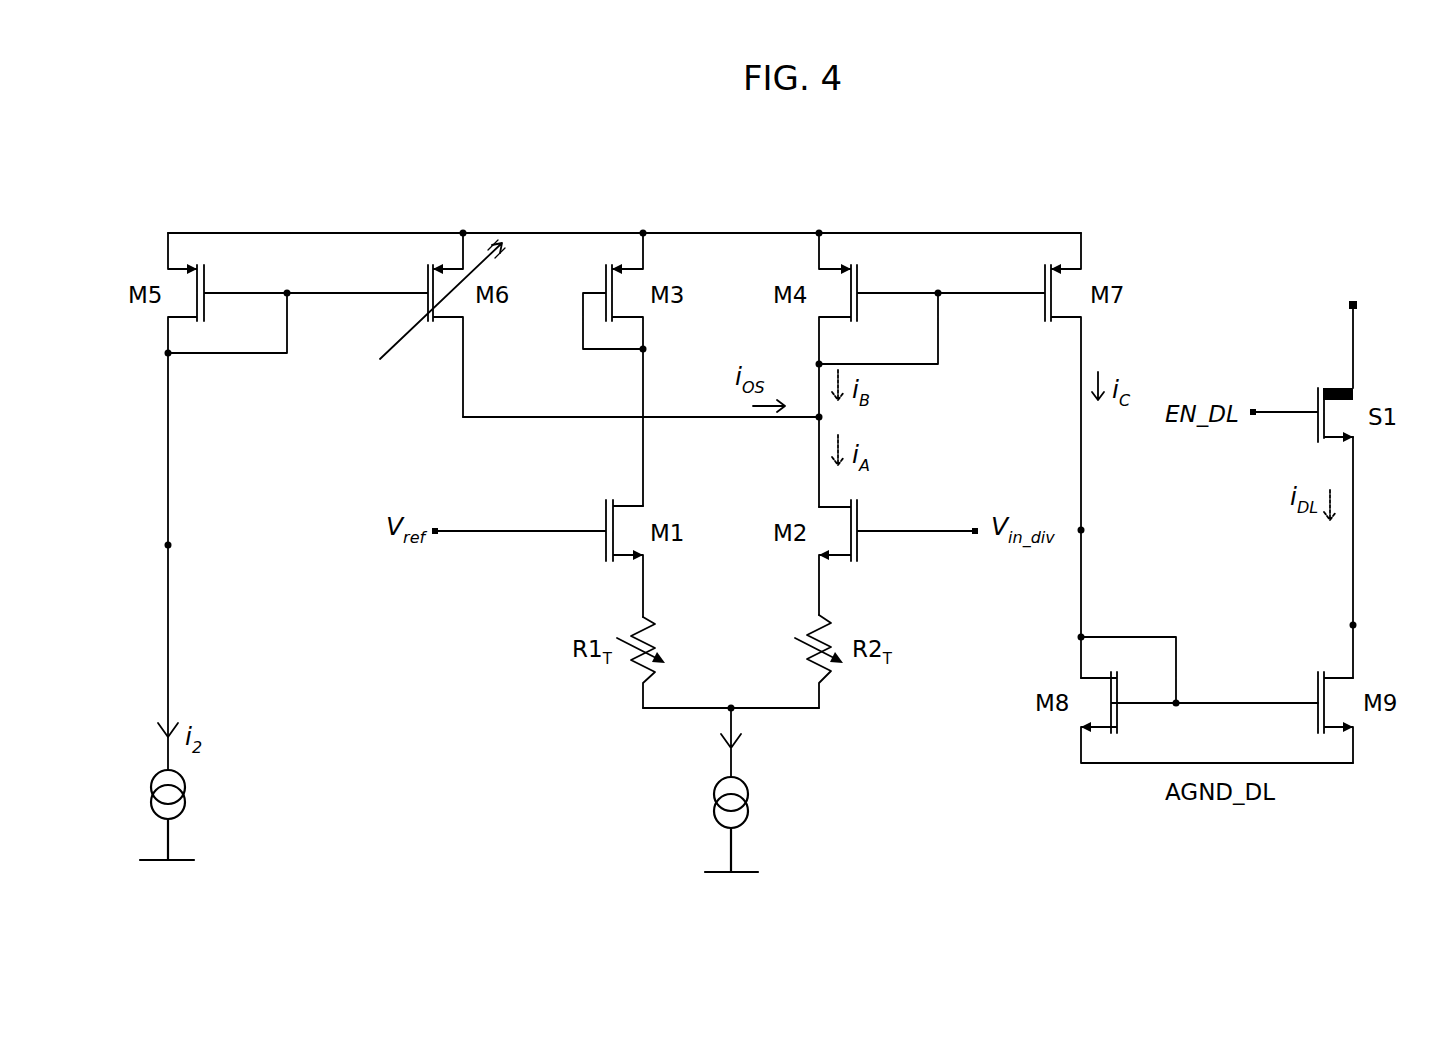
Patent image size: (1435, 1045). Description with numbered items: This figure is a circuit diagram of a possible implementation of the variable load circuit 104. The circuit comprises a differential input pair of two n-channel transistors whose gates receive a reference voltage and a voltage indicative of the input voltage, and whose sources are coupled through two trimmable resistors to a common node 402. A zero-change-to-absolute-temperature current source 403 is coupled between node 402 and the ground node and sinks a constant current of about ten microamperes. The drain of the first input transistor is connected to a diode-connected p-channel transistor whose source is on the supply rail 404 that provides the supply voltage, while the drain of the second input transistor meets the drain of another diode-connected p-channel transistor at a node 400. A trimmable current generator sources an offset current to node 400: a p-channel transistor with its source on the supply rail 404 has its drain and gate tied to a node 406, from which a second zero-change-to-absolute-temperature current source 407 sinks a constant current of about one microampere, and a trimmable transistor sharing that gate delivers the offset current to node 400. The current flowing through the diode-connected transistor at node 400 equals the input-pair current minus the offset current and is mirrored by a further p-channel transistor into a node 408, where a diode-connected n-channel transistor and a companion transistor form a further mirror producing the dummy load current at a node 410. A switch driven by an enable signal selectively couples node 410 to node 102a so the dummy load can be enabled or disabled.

The variable load circuit 104 is at (1030, 180).
The supply rail 404 is at (643, 233).
The node 400 is at (818, 418).
The node 402 is at (731, 708).
The current source 403 is at (713, 795).
The node 406 is at (170, 545).
The current source 407 is at (185, 795).
The node 408 is at (1083, 530).
The node 410 is at (1355, 625).
The node 102a is at (1353, 305).